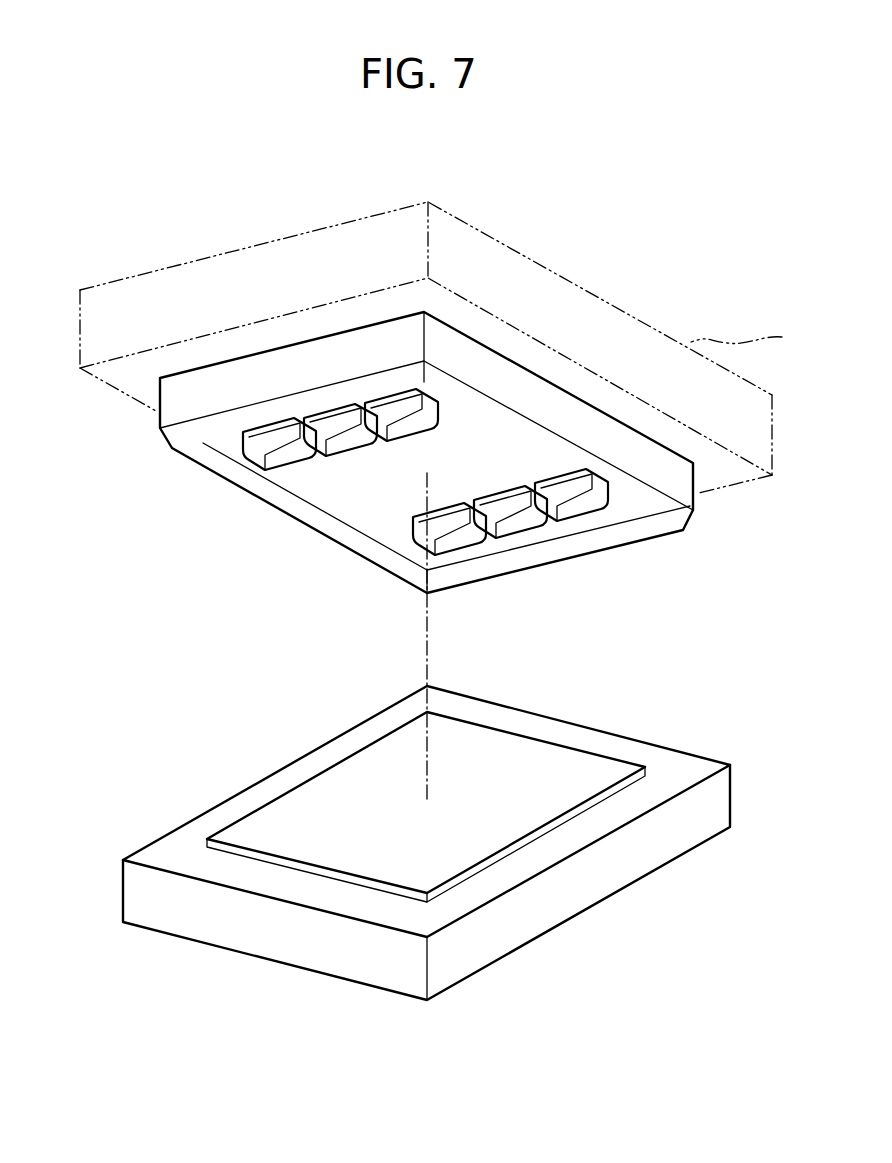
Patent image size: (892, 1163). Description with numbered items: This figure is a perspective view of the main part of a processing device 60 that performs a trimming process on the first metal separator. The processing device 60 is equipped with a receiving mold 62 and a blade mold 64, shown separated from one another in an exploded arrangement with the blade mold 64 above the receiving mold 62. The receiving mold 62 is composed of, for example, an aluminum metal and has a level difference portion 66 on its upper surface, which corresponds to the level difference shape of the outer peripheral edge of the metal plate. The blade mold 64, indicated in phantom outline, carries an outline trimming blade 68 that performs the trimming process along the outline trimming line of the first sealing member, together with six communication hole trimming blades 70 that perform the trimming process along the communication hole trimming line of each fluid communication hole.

The processing device 60 is at (388, 172).
The receiving mold 62 is at (668, 744).
The blade mold 64 is at (688, 344).
The level difference portion 66 is at (602, 795).
The outline trimming blade 68 is at (517, 562).
The communication hole trimming blades 70 is at (408, 421).